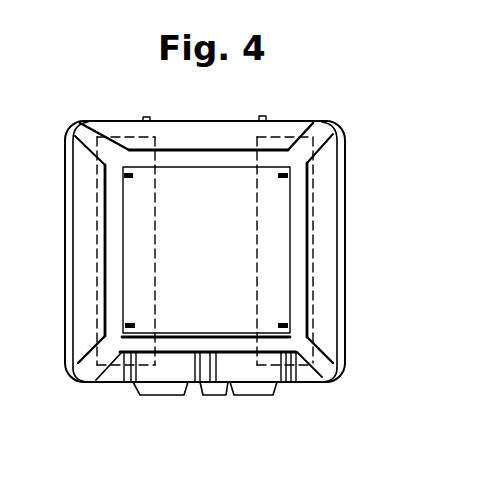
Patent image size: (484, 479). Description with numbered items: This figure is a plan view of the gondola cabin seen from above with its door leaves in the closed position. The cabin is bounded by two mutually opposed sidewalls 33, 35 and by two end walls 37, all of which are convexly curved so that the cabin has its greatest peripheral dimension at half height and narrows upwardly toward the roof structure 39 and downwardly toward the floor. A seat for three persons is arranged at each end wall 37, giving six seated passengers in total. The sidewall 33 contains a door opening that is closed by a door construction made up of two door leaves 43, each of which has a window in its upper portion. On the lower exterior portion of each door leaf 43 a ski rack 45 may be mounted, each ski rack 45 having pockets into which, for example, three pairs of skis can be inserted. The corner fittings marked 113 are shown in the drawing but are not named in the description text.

The sidewall 33 is at (310, 384).
The sidewall 35 is at (122, 121).
The end wall 37 is at (65, 250).
The roof structure 39 is at (483, 233).
The door leaf 43 is at (188, 396).
The ski rack 45 is at (158, 396).
The corner clip 113 is at (282, 180).